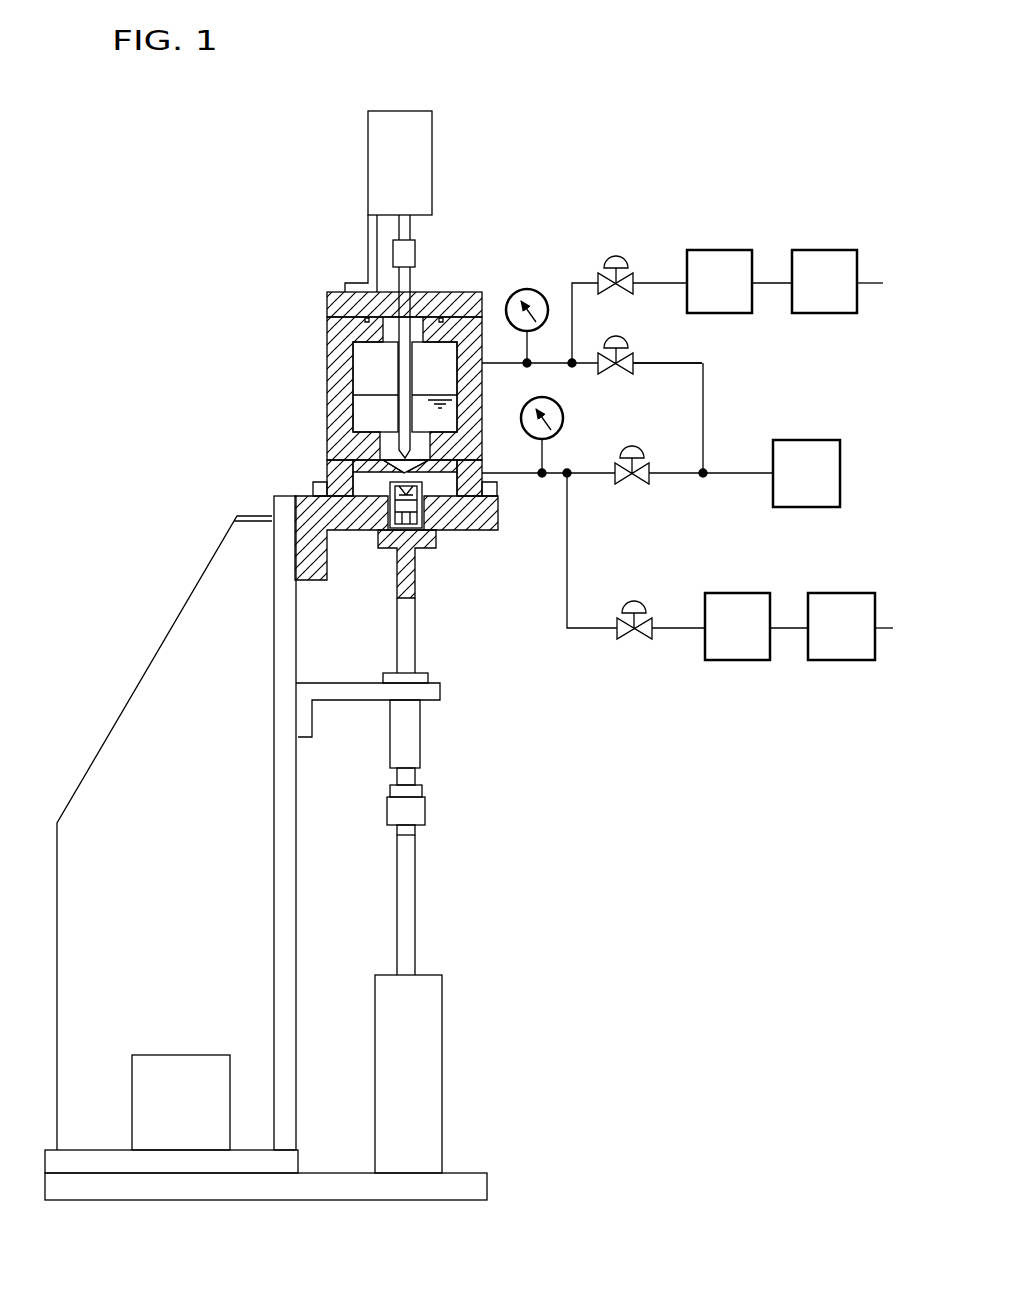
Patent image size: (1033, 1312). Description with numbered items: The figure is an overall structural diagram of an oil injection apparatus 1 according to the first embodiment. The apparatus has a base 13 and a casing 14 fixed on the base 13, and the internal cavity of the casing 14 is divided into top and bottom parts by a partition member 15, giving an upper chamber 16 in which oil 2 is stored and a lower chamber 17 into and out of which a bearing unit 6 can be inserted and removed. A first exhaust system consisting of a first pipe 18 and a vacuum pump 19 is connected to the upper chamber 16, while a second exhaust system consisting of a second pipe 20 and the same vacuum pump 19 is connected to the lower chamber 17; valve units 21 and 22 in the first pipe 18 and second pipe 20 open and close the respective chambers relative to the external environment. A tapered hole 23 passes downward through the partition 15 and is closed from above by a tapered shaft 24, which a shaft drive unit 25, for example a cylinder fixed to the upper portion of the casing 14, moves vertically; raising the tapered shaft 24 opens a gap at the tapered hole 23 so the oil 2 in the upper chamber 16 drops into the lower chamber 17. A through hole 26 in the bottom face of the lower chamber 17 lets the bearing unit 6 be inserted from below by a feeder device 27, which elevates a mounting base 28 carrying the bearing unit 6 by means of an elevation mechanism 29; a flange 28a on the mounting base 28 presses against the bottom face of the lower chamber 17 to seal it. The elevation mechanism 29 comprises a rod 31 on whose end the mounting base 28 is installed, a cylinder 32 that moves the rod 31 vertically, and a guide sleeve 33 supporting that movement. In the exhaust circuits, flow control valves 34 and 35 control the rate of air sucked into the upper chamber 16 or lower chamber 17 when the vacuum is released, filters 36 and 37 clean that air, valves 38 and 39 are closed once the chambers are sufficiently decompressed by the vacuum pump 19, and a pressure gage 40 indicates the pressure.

The oil injection apparatus 1 is at (672, 155).
The oil 2 is at (380, 398).
The bearing unit 6 is at (378, 505).
The base 13 is at (298, 940).
The casing 14 is at (330, 420).
The partition member 15 is at (353, 463).
The upper chamber 16 is at (360, 373).
The lower chamber 17 is at (360, 483).
The first pipe 18 is at (497, 360).
The vacuum pump 19 is at (820, 440).
The second pipe 20 is at (552, 477).
The valve unit 21 is at (613, 255).
The valve unit 22 is at (635, 598).
The tapered hole 23 is at (412, 449).
The tapered shaft 24 is at (408, 405).
The shaft drive unit 25 is at (417, 132).
The through hole 26 is at (413, 550).
The feeder device 27 is at (470, 882).
The mounting base 28 is at (390, 548).
The flange 28a is at (378, 537).
The elevation mechanism 29 is at (443, 1027).
The rod 31 is at (417, 637).
The cylinder 32 is at (422, 1128).
The guide sleeve 33 is at (407, 738).
The flow control valve 34 is at (729, 250).
The flow control valve 35 is at (738, 593).
The filter 36 is at (822, 250).
The filter 37 is at (848, 593).
The valve 38 is at (630, 340).
The valve 39 is at (647, 450).
The pressure gage 40 is at (524, 288).